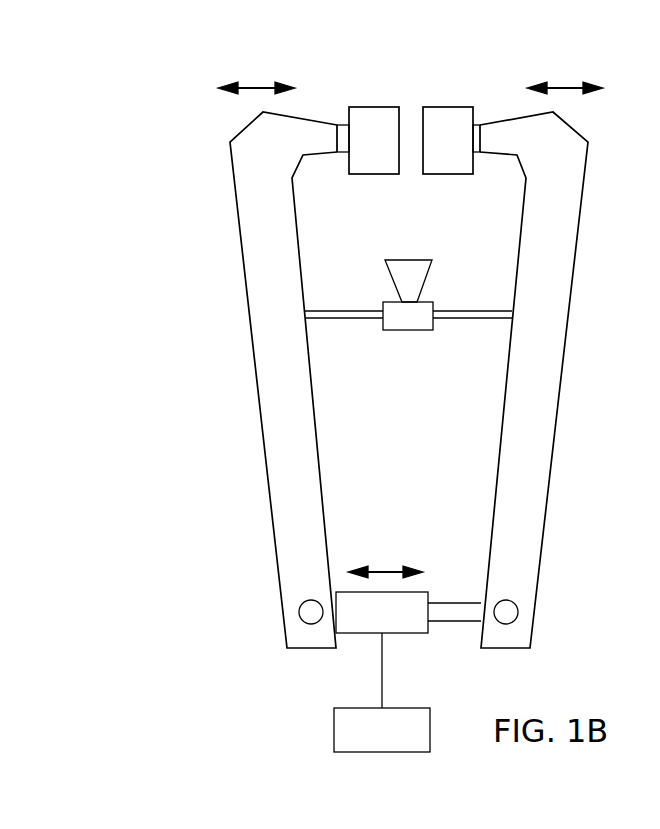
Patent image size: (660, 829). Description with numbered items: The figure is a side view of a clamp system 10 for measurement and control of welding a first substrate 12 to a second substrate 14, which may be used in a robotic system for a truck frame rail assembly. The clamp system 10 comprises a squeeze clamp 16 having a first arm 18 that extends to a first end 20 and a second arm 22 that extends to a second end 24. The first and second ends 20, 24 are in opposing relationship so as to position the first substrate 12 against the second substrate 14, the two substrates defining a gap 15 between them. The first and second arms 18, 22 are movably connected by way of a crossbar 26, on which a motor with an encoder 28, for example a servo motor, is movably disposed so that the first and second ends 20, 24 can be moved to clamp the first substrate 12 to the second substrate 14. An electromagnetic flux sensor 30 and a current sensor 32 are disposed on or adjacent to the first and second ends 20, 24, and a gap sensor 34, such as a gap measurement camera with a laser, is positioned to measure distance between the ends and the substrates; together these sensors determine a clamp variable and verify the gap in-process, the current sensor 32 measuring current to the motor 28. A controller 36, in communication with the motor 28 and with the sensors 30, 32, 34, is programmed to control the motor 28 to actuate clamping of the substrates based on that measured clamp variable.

The clamp system 10 is at (184, 78).
The first substrate 12 is at (366, 107).
The second substrate 14 is at (452, 107).
The gap 15 is at (412, 172).
The squeeze clamp 16 is at (235, 288).
The first arm 18 is at (237, 203).
The first end 20 is at (338, 144).
The second arm 22 is at (581, 205).
The second end 24 is at (476, 152).
The crossbar 26 is at (455, 603).
The motor with an encoder 28 is at (342, 592).
The electromagnetic flux sensor 30 is at (343, 124).
The current sensor 32 is at (476, 124).
The gap sensor 34 is at (408, 330).
The controller 36 is at (382, 692).